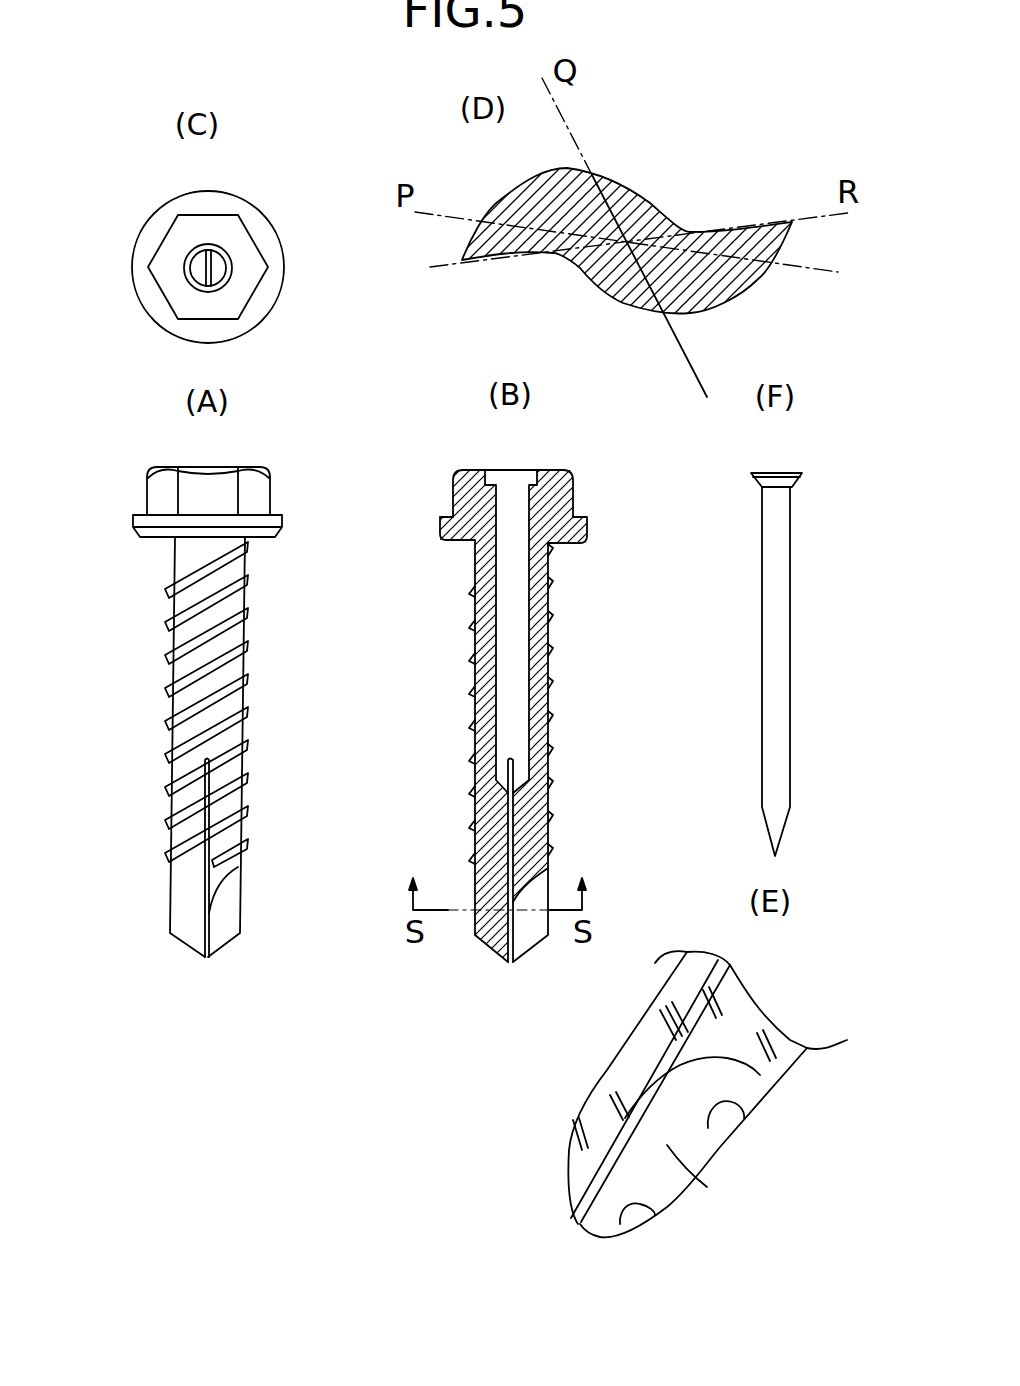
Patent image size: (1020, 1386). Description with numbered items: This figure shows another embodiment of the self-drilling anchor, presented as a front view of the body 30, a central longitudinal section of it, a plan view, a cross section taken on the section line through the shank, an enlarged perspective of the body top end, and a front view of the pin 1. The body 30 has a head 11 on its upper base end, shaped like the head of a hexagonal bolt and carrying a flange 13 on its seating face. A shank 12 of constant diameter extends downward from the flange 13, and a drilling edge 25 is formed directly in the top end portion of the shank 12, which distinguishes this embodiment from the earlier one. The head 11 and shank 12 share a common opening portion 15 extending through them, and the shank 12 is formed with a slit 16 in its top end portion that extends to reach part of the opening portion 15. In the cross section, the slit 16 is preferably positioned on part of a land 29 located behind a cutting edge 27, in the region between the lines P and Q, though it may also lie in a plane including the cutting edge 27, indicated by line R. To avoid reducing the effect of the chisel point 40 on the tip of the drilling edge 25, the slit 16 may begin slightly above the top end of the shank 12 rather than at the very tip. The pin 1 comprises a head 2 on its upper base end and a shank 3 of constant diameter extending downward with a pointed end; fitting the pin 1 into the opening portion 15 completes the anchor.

The pin 1 is at (815, 630).
The head 2 is at (777, 477).
The shank 3 is at (773, 668).
The head 11 is at (230, 245).
The shank 12 is at (232, 725).
The flange 13 is at (273, 255).
The opening portion 15 is at (218, 270).
The slit 16 is at (190, 260).
The drilling edge 25 is at (228, 897).
The cutting edge 27 is at (792, 222).
The land 29 is at (547, 197).
The body 30 is at (259, 663).
The chisel point 40 is at (203, 960).